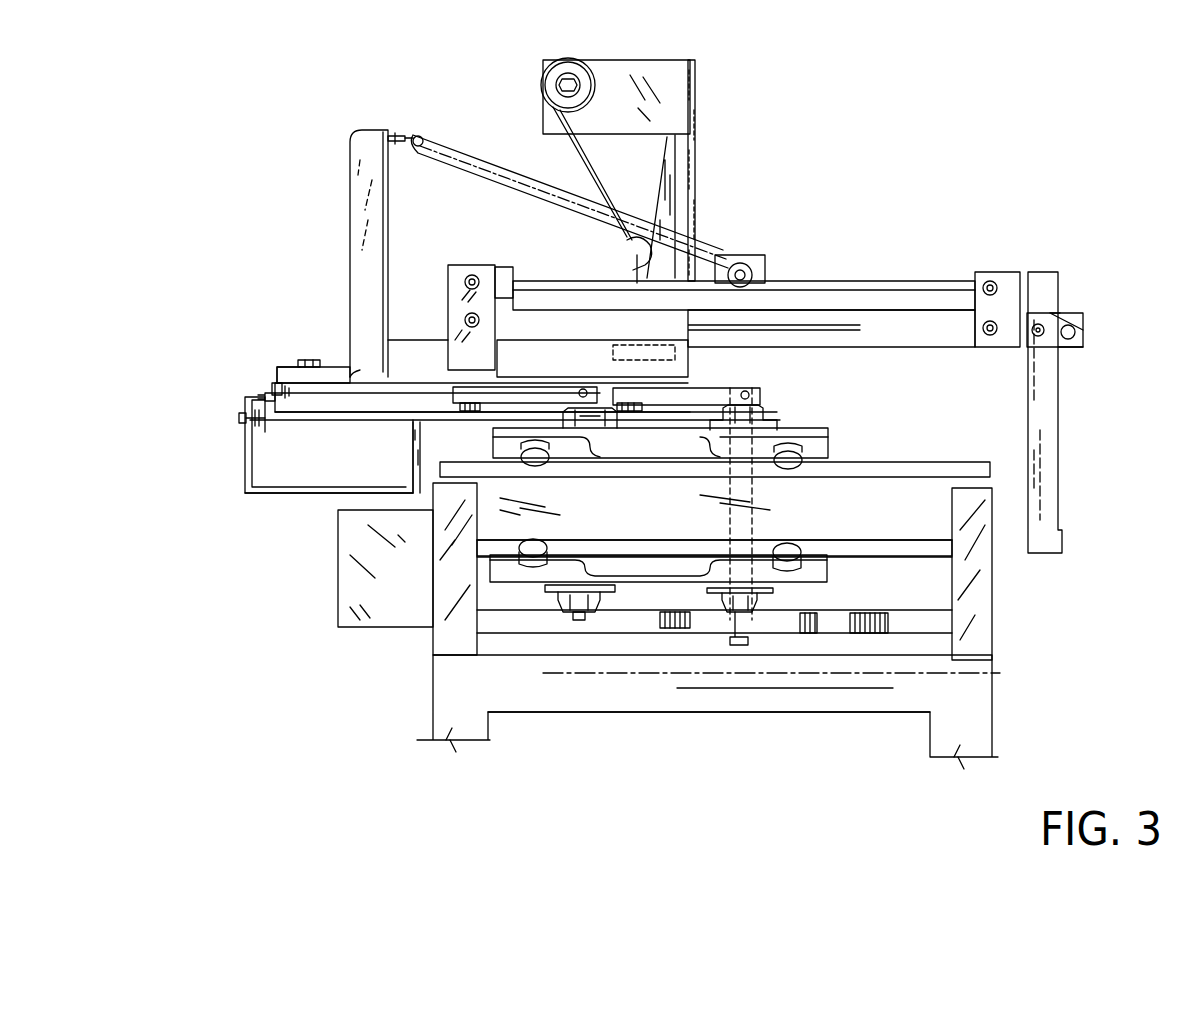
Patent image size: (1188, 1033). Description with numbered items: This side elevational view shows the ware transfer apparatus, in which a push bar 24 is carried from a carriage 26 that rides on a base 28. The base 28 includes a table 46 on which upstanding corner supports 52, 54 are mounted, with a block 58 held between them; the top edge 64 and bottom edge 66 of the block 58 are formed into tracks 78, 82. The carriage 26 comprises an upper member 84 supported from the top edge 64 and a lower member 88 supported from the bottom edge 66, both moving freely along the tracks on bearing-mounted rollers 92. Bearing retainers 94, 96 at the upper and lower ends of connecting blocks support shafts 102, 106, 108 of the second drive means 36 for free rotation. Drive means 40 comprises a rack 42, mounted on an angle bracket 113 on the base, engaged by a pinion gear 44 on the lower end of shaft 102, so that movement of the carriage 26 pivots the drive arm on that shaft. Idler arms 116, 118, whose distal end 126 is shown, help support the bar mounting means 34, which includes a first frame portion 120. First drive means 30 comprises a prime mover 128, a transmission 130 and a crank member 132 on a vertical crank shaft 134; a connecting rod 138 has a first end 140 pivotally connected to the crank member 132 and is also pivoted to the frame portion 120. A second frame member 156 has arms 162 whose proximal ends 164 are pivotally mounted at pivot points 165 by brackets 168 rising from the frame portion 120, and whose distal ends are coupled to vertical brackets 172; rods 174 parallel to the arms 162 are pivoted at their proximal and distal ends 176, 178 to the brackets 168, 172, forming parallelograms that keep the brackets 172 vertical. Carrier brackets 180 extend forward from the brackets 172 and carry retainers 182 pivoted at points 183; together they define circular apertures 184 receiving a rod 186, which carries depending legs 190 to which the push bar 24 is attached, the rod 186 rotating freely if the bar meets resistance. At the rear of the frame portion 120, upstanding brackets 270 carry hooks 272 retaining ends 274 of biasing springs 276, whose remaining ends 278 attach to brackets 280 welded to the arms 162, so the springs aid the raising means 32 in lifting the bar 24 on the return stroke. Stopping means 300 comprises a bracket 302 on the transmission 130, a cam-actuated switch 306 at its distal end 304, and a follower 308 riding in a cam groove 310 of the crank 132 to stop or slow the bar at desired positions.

The push bar 24 is at (1100, 548).
The carriage 26 is at (872, 574).
The base 28 is at (1020, 692).
The first drive means 30 is at (318, 579).
The means for raising the bar 32 is at (768, 68).
The bar support means 34 is at (845, 352).
The second drive means 36 is at (752, 684).
The means for driving drive arm 40 is at (908, 604).
The rack 42 is at (848, 628).
The pinion gear 44 is at (688, 622).
The table 46 is at (495, 657).
The corner support 52 is at (985, 622).
The corner support 54 is at (440, 628).
The block 58 is at (908, 533).
The top edge of block 64 is at (944, 432).
The bottom edge of block 66 is at (848, 570).
The track 78 is at (882, 470).
The track 82 is at (950, 549).
The carriage member 84 is at (815, 440).
The carriage member 88 is at (520, 575).
The bearing-mounted rollers 92 is at (536, 466).
The bearing retainer 94 is at (725, 414).
The bearing retainer 96 is at (605, 597).
The shaft 102 is at (748, 641).
The shaft 106 is at (765, 608).
The shaft 108 is at (578, 622).
The angle bracket 113 is at (917, 625).
The idler arm 116 is at (690, 405).
The idler arm 118 is at (530, 390).
The first frame portion 120 is at (725, 357).
The distal end of idler arm 126 is at (623, 392).
The prime mover 128 is at (447, 383).
The transmission 130 is at (400, 588).
The crank member 132 is at (358, 437).
The crank shaft 134 is at (412, 452).
The connecting rod 138 is at (335, 372).
The first end of connecting rod 140 is at (290, 372).
The second frame member 156 is at (830, 200).
The arms 162 is at (919, 340).
The proximal end of arm 164 is at (462, 330).
The pivotal mounting point 165 is at (465, 316).
The brackets 168 is at (458, 240).
The brackets 172 is at (1003, 240).
The rods 174 is at (870, 283).
The proximal end of rod 176 is at (505, 275).
The distal end of rod 178 is at (988, 281).
The carrier bracket 180 is at (1072, 347).
The retainer 182 is at (1083, 322).
The pivot point 183 is at (1045, 325).
The circular aperture 184 is at (1078, 335).
The rod 186 is at (1066, 320).
The depending legs 190 is at (1045, 446).
The upstanding brackets 270 is at (362, 190).
The hook 272 is at (400, 136).
The spring end 274 is at (428, 142).
The biasing springs 276 is at (507, 168).
The spring end 278 is at (742, 263).
The brackets 280 is at (757, 262).
The stopping means 300 is at (225, 457).
The bracket 302 is at (285, 495).
The distal end of bracket 304 is at (238, 417).
The cam actuated switch 306 is at (268, 397).
The follower 308 is at (272, 386).
The cam groove 310 is at (312, 395).